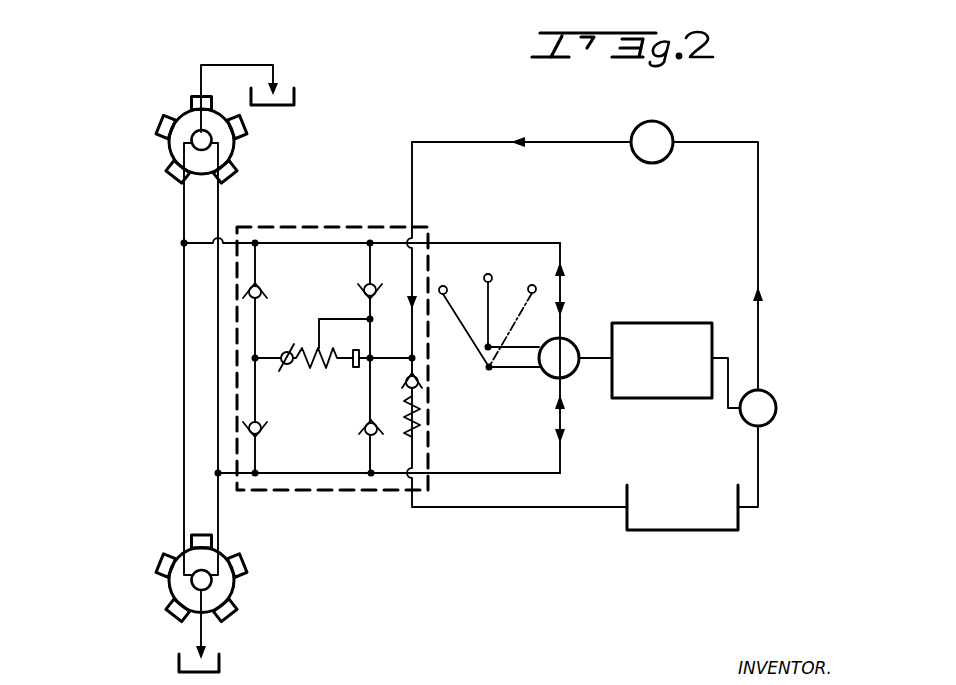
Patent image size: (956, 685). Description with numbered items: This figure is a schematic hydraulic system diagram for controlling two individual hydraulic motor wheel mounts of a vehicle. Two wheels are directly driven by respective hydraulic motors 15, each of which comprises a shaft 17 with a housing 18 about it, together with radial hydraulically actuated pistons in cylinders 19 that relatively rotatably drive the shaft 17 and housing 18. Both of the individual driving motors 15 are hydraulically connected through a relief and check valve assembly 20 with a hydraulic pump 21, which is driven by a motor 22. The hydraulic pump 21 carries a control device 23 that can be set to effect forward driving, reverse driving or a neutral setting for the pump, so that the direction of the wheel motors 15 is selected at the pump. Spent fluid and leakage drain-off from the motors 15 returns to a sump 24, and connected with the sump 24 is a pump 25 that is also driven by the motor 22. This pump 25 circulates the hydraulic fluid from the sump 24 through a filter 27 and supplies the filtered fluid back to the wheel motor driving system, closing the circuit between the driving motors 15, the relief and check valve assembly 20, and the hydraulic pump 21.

The hydraulic motor 15 is at (192, 368).
The shaft 17 is at (204, 139).
The housing 18 is at (174, 151).
The cylinders 19 is at (178, 178).
The valve block 20 is at (298, 228).
The hydraulic pump 21 is at (547, 373).
The motor 22 is at (663, 398).
The control device 23 is at (516, 320).
The sump 24 is at (294, 93).
The pump 25 is at (772, 400).
The filter 27 is at (667, 124).